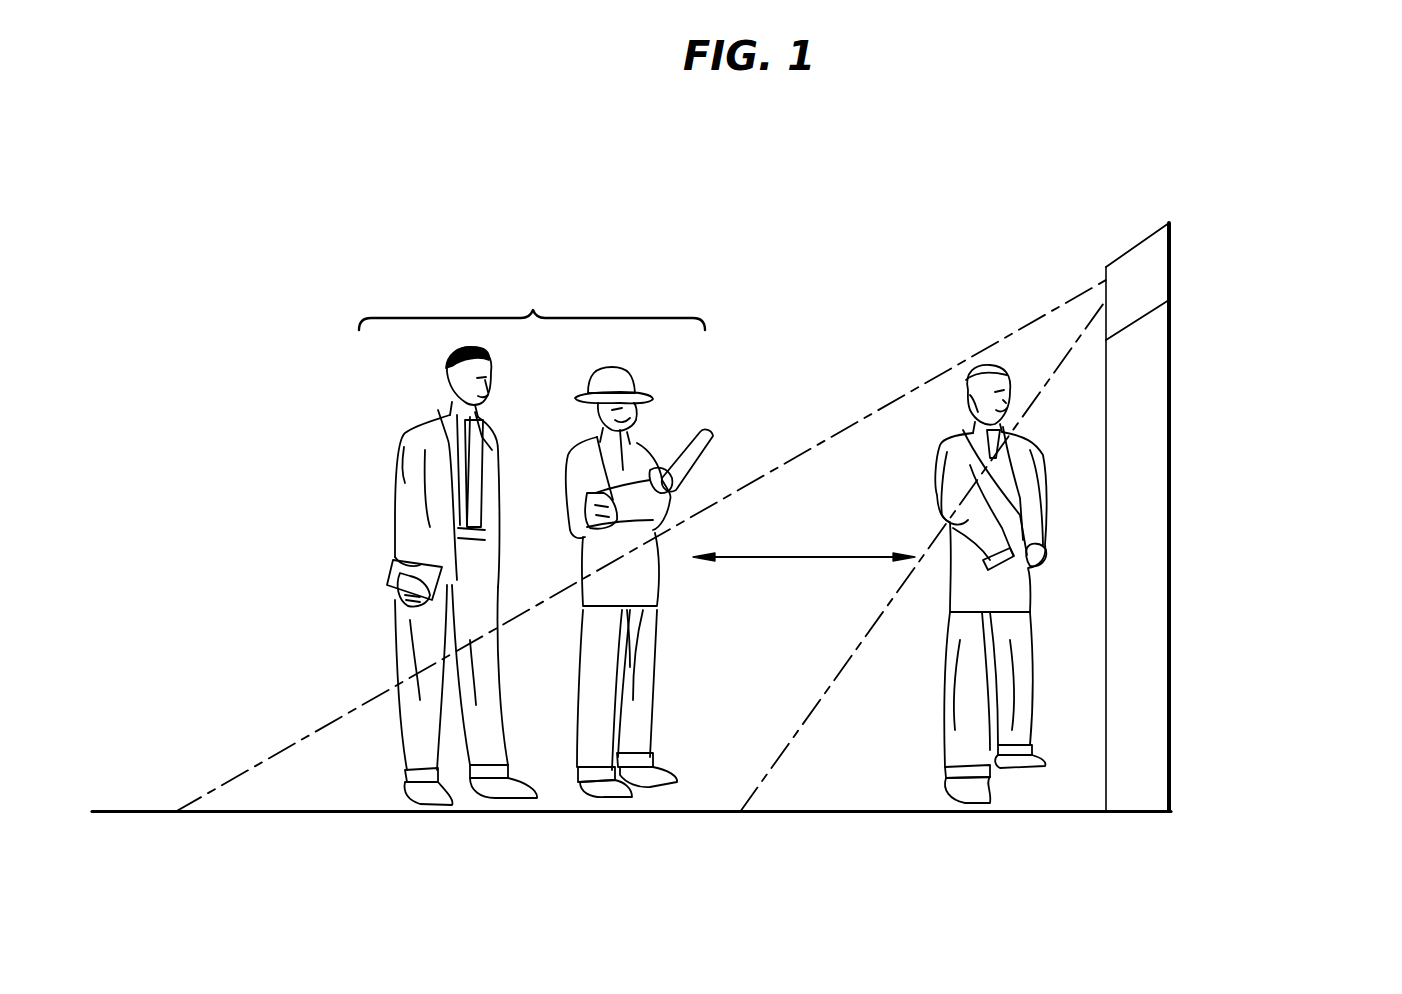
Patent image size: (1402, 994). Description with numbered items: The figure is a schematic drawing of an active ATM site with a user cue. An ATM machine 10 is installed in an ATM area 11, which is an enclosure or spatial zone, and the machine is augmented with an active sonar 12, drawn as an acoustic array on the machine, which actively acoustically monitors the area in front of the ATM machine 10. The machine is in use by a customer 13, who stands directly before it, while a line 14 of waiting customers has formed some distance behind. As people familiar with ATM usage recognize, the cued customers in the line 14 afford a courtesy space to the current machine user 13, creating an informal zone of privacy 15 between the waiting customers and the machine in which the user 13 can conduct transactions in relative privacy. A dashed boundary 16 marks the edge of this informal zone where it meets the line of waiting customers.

The ATM machine 10 is at (1133, 513).
The ATM area 11 is at (1172, 724).
The active sonar 12 is at (1204, 280).
The customer 13 is at (990, 306).
The line of waiting customers 14 is at (707, 843).
The zone of privacy 15 is at (832, 516).
The boundary line of zone of privacy 16 is at (782, 464).